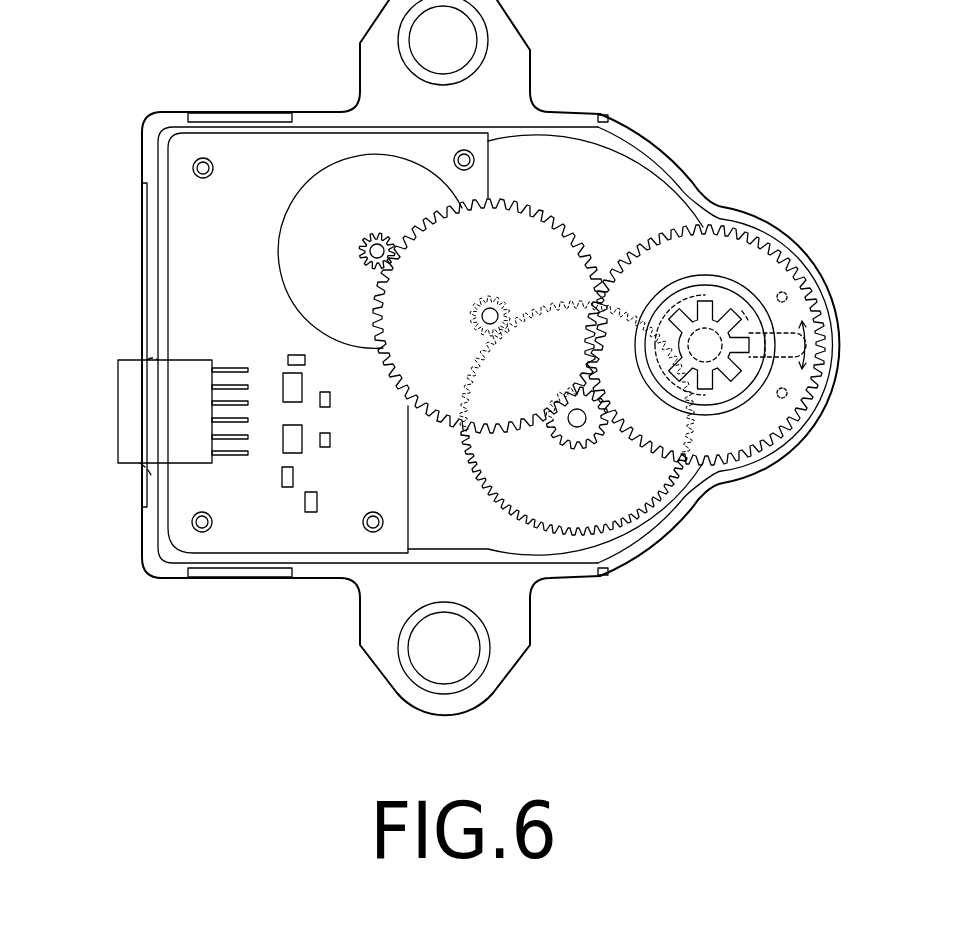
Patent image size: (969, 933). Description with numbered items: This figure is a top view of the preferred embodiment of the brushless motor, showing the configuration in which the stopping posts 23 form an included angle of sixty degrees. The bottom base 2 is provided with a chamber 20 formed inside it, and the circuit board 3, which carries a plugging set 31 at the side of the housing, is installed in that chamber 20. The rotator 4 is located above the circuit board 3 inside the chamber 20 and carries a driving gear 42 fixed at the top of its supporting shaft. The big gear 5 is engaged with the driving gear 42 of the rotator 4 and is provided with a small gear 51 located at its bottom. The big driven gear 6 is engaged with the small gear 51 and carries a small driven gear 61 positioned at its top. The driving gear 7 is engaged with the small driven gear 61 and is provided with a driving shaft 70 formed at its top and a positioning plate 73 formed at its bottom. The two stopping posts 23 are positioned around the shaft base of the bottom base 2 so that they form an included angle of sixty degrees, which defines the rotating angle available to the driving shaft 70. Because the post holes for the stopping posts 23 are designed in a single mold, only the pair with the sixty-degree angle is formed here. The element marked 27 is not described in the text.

The bottom base 2 is at (140, 164).
The circuit board 3 is at (270, 515).
The rotator 4 is at (350, 190).
The driving gear 42 is at (362, 256).
The big gear 5 is at (512, 243).
The small gear 51 is at (503, 300).
The chamber 20 is at (632, 197).
The driving shaft 70 is at (735, 298).
The stopping posts 23 is at (786, 294).
The positioning plate 73 is at (790, 360).
The driving gear 7 is at (735, 427).
The small driven gear 61 is at (583, 432).
The big driven gear 6 is at (572, 493).
The connector opening 27 is at (153, 463).
The plugging set 31 is at (118, 411).